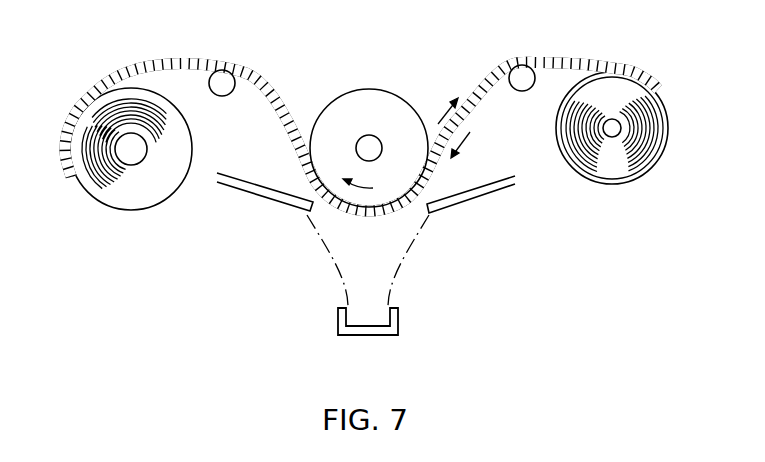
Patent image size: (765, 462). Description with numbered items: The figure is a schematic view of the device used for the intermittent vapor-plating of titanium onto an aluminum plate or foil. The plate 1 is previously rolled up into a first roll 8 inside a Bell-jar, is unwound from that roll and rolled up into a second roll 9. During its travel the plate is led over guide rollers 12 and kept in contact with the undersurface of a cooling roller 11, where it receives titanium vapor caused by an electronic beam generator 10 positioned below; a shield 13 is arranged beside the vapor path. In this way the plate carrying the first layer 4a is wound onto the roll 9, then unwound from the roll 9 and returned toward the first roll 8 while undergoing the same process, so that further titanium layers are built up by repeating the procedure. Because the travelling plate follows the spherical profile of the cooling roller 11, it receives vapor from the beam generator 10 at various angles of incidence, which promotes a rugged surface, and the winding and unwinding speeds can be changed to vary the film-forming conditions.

The magnetic tape 1 is at (468, 112).
The first layer 4a is at (286, 127).
The first roll 8 is at (617, 166).
The second roll 9 is at (120, 196).
The electronic beam generator 10 is at (364, 331).
The cooling roller 11 is at (377, 98).
The guide rollers 12 is at (216, 90).
The shield 13 is at (238, 189).